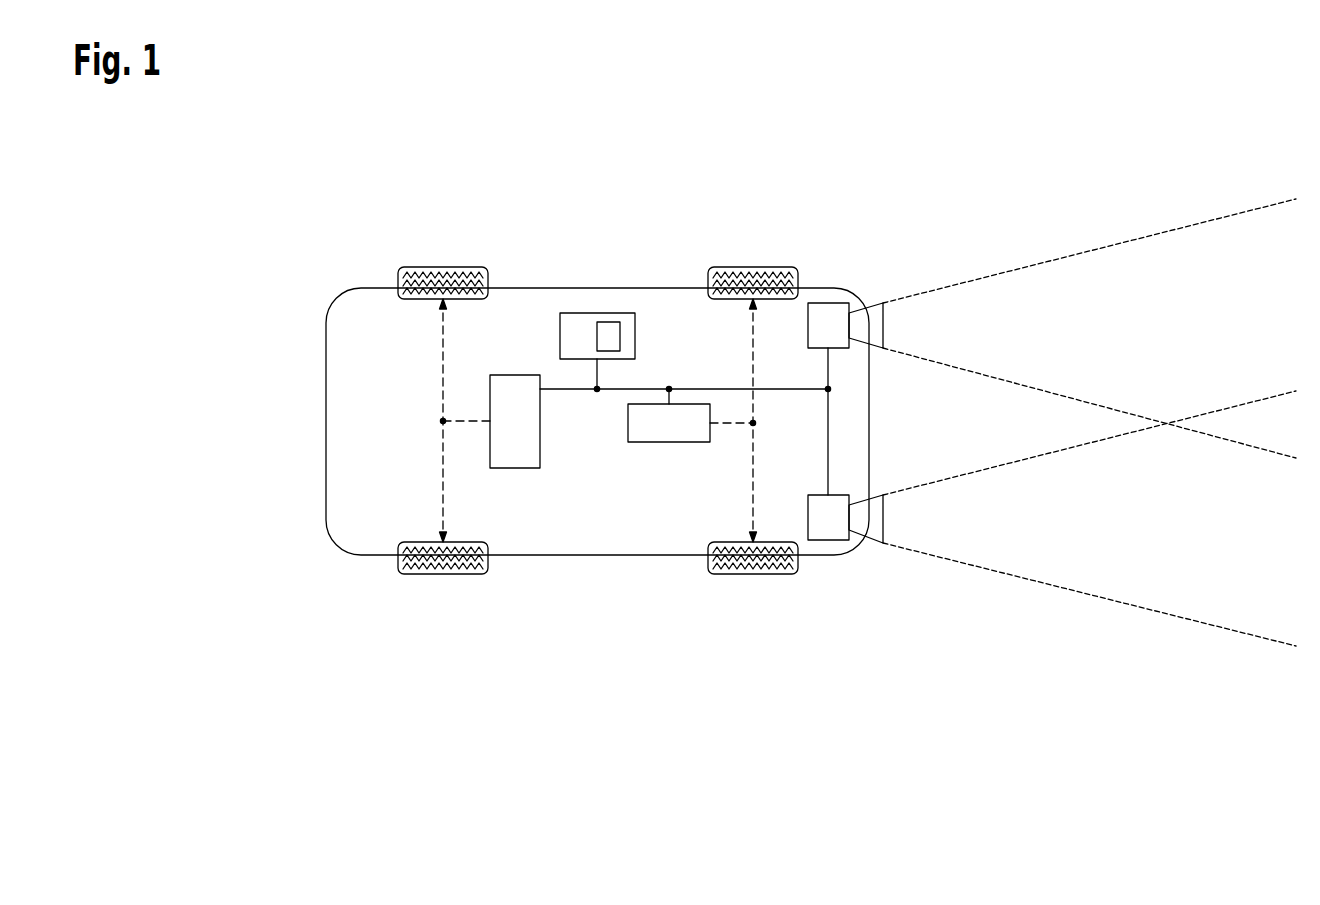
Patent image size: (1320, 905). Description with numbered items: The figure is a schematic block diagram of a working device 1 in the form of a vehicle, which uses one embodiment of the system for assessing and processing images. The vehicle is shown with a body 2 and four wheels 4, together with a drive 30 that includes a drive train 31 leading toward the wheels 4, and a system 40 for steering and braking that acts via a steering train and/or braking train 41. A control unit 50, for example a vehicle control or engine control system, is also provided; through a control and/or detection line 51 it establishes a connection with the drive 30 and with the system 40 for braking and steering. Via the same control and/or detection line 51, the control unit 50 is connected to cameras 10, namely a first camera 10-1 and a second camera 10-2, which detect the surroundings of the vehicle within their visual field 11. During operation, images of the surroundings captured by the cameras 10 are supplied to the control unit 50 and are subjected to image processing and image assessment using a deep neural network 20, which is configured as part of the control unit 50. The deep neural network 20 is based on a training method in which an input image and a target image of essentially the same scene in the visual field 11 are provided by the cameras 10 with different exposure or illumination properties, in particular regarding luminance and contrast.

The working device 1 is at (243, 213).
The body 2 is at (514, 285).
The wheels 4 is at (440, 278).
The cameras 10 is at (840, 422).
The first camera 10-1 is at (828, 320).
The second camera 10-2 is at (828, 528).
The visual field 11 is at (1100, 283).
The deep neural network 20 is at (610, 337).
The drive 30 is at (517, 455).
The drive train 31 is at (443, 330).
The system for steering and braking 40 is at (650, 445).
The steering train and/or braking train 41 is at (750, 508).
The control unit 50 is at (583, 325).
The control and/or detection line 51 is at (697, 387).